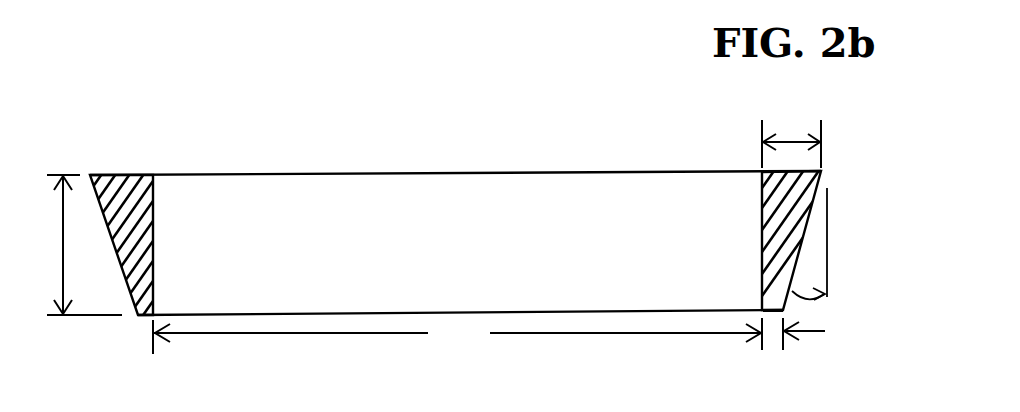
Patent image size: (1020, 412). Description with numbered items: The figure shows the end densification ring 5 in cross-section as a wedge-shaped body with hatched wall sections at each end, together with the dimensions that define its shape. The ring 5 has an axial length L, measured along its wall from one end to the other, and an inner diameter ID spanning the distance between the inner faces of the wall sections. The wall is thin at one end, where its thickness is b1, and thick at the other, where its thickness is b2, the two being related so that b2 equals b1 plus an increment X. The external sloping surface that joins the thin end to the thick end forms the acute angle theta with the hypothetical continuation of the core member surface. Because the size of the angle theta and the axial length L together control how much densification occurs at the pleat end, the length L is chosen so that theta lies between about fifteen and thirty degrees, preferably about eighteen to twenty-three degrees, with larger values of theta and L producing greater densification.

The end densification ring 5 is at (820, 188).
The axial length of the ring L is at (84, 245).
The inner diameter ID is at (457, 336).
The wall thickness at the thin end b1 is at (817, 335).
The wall thickness at the thick end b2 is at (791, 144).
The acute angle theta is at (809, 244).